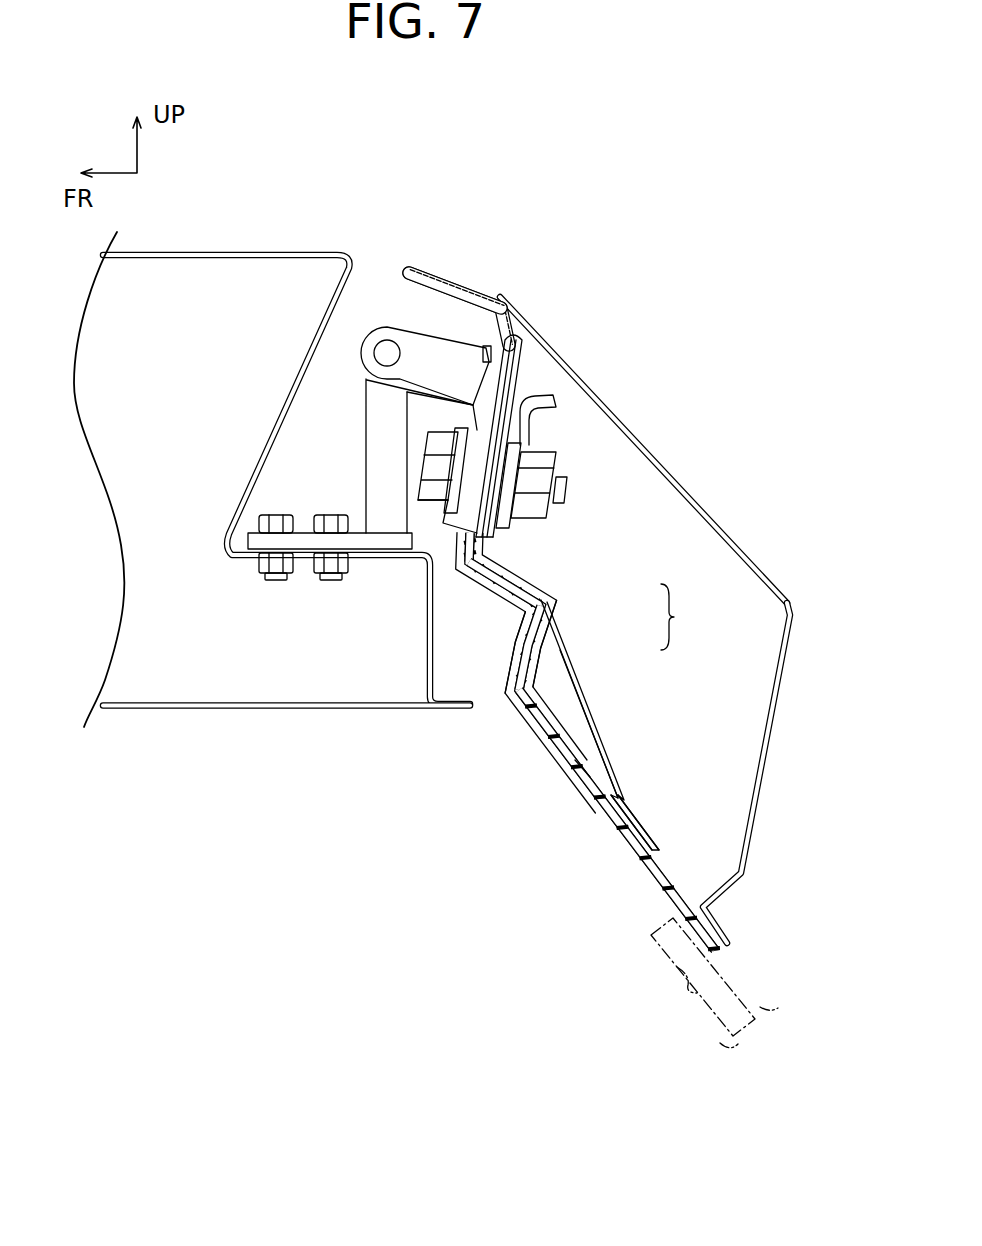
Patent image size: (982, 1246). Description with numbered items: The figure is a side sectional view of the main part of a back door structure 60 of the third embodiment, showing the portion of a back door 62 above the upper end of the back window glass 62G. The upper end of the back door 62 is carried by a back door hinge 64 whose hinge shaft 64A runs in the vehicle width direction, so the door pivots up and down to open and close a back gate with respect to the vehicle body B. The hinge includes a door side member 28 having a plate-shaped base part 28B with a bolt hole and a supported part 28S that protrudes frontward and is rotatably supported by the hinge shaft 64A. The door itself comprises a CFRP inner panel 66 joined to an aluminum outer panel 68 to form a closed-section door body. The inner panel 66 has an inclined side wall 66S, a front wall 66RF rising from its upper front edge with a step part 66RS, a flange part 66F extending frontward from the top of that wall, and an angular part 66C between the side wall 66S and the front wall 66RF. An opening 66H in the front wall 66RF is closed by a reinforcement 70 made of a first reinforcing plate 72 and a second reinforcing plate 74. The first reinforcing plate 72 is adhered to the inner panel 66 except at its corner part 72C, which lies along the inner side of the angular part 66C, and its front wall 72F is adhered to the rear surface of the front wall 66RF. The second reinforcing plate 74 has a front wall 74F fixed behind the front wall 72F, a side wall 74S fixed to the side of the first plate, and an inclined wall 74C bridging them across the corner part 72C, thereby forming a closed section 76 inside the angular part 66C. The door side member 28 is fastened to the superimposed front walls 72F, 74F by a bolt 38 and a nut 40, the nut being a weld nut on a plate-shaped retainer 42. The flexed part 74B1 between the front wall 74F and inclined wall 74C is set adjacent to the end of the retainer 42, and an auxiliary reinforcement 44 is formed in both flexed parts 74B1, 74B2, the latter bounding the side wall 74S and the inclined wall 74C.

The vehicle body B is at (275, 222).
The door side member 28 is at (426, 407).
The base part 28B is at (477, 430).
The supported part 28S is at (458, 360).
The bolt 38 is at (567, 493).
The nut 40 is at (552, 515).
The retainer 42 is at (527, 397).
The auxiliary reinforcement 44 is at (500, 543).
The back door structure 60 is at (610, 457).
The back door 62 is at (726, 499).
The back window glass 62G is at (697, 967).
The back door hinge 64 is at (365, 302).
The hinge shaft 64A is at (388, 340).
The inner panel 66 is at (612, 837).
The angular part 66C is at (517, 697).
The flange part 66F is at (443, 283).
The opening 66H is at (497, 340).
The front wall 66RF is at (467, 560).
The step part 66RS is at (503, 607).
The side wall 66S is at (610, 797).
The outer panel 68 is at (673, 478).
The reinforcement 70 is at (682, 617).
The first reinforcing plate 72 is at (549, 664).
The corner part 72C is at (530, 690).
The front wall 72F is at (523, 347).
The second reinforcing plate 74 is at (565, 628).
The flexed part 74B1 is at (477, 537).
The flexed part 74B2 is at (582, 768).
The inclined wall 74C is at (571, 711).
The front wall 74F is at (512, 352).
The side wall 74S is at (620, 796).
The closed section 76 is at (587, 710).